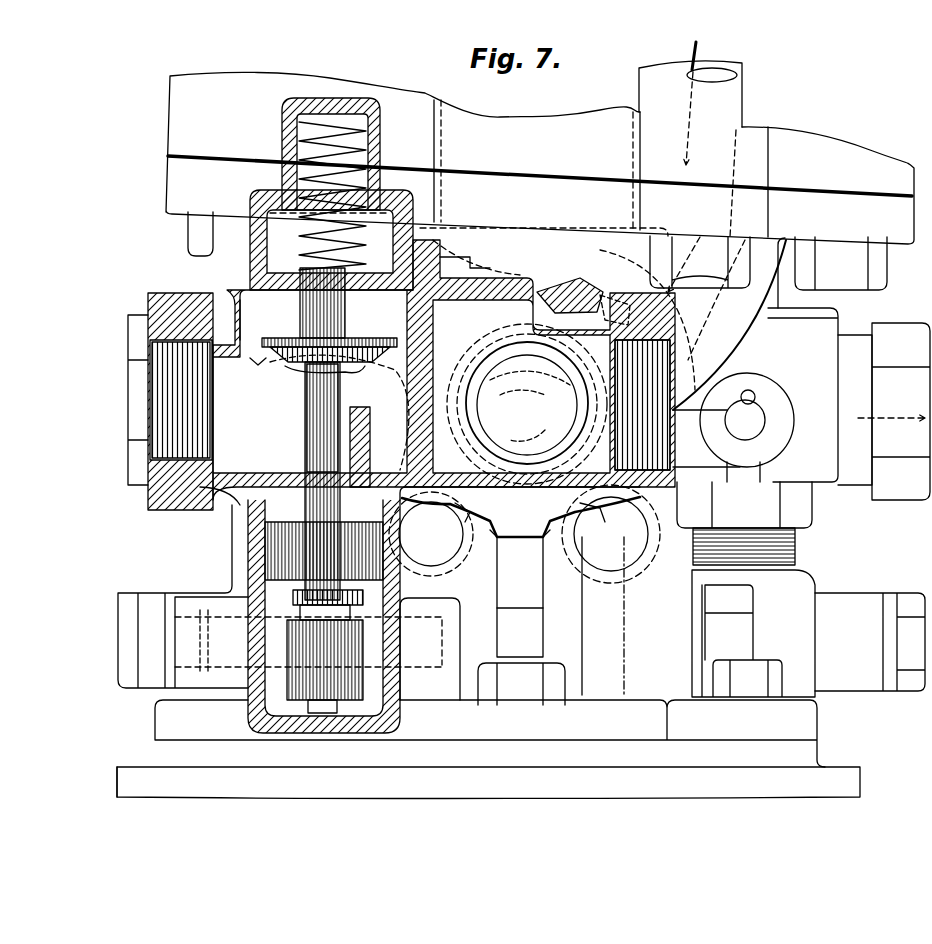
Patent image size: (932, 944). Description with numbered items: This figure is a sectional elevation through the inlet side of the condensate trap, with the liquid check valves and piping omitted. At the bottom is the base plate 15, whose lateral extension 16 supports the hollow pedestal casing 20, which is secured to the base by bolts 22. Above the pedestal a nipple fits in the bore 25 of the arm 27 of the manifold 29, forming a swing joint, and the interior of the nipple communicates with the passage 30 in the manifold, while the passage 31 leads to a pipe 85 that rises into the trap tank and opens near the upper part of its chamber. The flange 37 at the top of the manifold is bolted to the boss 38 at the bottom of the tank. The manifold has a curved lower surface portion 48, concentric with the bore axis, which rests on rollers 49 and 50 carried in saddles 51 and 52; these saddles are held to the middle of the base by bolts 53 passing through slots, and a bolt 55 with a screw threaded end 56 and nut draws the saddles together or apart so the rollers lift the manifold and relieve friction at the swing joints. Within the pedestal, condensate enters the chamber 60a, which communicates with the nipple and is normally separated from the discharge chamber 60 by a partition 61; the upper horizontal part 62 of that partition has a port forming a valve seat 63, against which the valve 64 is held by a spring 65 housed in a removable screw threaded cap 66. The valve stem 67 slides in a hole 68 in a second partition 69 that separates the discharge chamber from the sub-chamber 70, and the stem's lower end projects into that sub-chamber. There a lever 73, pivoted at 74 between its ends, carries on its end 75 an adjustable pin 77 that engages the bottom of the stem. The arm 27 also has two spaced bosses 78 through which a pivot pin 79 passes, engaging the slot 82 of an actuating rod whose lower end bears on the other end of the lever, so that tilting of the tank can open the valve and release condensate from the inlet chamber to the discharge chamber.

The base plate 15 is at (488, 749).
The lateral extension 16 is at (130, 768).
The hollow pedestal casing 20 is at (472, 277).
The bolt 22 is at (560, 674).
The bore 25 is at (515, 462).
The arm 27 is at (647, 320).
The manifold 29 is at (750, 342).
The passage 30 is at (452, 255).
The passage 31 is at (748, 302).
The flange 37 is at (172, 172).
The boss 38 is at (175, 108).
The lower surface portion 48 is at (520, 511).
The roller 49 is at (605, 565).
The roller 50 is at (445, 548).
The saddle 51 is at (545, 565).
The saddle 52 is at (498, 545).
The bolt 53 is at (733, 686).
The bolt 55 is at (530, 628).
The screw threaded end 56 is at (562, 286).
The discharge chamber 60 is at (356, 375).
The chamber 60a is at (530, 503).
The partition 61 is at (527, 404).
The upper horizontal part 62 is at (258, 362).
The valve seat 63 is at (295, 380).
The valve 64 is at (380, 340).
The spring 65 is at (310, 147).
The removable screw threaded cap 66 is at (258, 203).
The stem 67 is at (305, 446).
The hole 68 is at (305, 460).
The partition 69 is at (262, 500).
The sub-chamber 70 is at (258, 552).
The lever 73 is at (320, 645).
The pivot 74 is at (405, 662).
The end 75 is at (392, 640).
The adjustable pin 77 is at (395, 596).
The boss 78 is at (370, 447).
The pivot pin 79 is at (300, 415).
The slot 82 is at (320, 380).
The pipe 85 is at (745, 85).